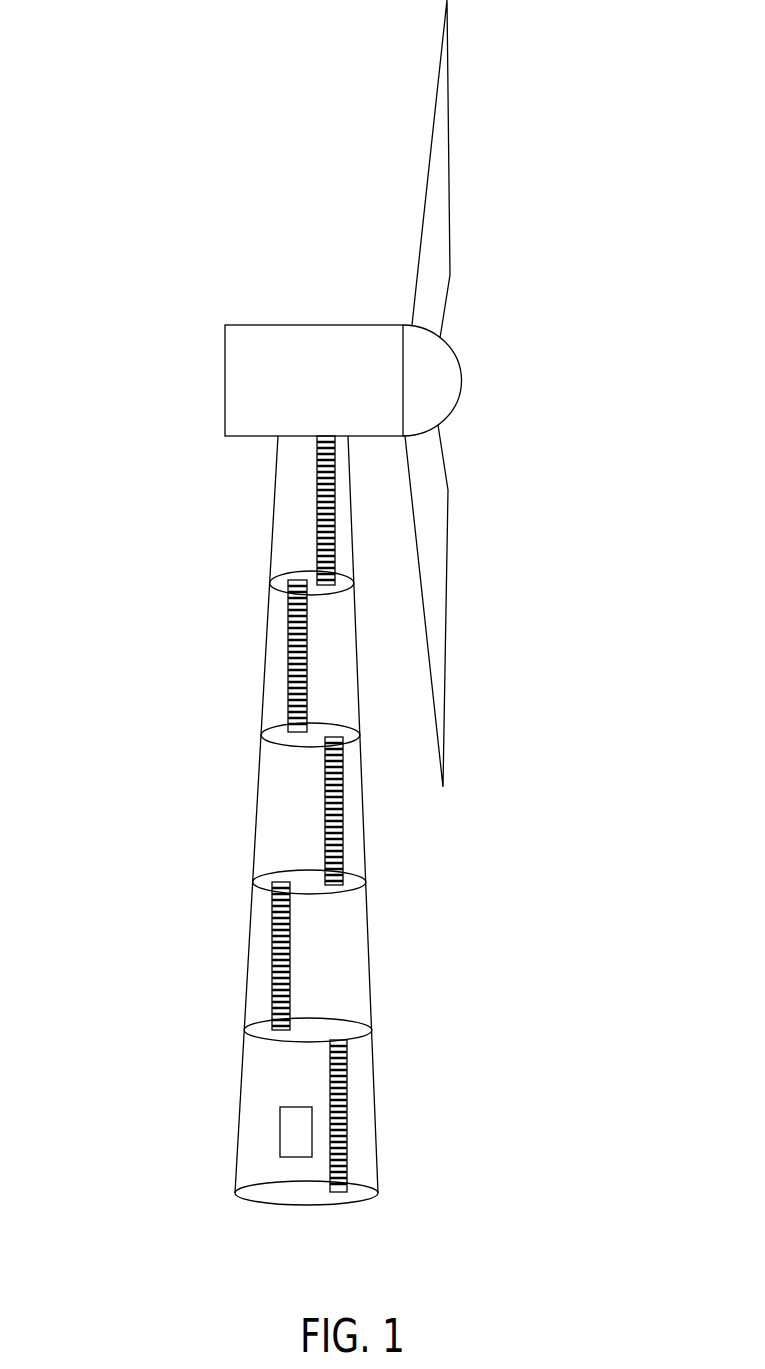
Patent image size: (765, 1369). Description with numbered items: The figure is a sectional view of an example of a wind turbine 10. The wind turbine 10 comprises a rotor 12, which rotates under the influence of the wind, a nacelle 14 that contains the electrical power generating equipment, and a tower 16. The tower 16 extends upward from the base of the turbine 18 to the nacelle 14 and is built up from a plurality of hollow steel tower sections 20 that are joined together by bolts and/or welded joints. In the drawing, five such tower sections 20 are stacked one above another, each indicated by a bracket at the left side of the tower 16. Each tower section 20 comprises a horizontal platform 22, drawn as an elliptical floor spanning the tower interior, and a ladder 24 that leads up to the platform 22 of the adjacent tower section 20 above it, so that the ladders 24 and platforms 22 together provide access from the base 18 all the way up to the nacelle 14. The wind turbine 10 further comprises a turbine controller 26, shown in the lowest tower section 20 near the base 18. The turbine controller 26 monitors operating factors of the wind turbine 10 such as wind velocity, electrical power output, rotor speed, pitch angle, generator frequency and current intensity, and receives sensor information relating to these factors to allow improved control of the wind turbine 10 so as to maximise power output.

The wind turbine 10 is at (125, 248).
The rotor 12 is at (485, 360).
The nacelle 14 is at (246, 338).
The tower 16 is at (460, 926).
The base of the turbine 18 is at (368, 1200).
The tower section 20 is at (228, 735).
The horizontal platform 22 is at (342, 585).
The ladder 24 is at (335, 537).
The turbine controller 26 is at (296, 1125).